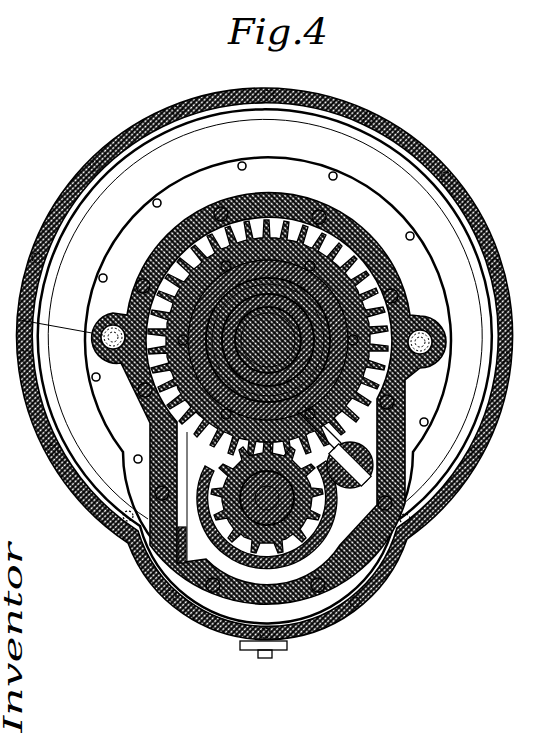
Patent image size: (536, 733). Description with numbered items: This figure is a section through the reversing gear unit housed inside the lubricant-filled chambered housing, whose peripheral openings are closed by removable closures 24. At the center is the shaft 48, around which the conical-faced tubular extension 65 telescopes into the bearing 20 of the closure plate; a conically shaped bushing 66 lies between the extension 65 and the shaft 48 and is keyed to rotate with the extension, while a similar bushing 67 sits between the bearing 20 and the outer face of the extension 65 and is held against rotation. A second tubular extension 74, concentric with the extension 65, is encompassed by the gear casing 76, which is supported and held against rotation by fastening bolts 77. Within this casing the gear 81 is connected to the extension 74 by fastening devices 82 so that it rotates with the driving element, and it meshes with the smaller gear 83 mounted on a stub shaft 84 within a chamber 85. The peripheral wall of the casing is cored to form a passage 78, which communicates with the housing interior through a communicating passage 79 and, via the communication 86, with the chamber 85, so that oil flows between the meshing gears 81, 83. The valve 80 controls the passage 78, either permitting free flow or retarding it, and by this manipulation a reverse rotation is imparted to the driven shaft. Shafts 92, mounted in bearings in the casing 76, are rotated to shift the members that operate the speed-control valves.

The bearing 20 is at (240, 265).
The tubular extension 74 is at (237, 222).
The fastening bolts 77 is at (222, 284).
The fastening devices 82 is at (308, 262).
The gear casing 76 is at (357, 242).
The gear 81 is at (390, 297).
The shafts 92 is at (420, 340).
The bushing 66 is at (158, 312).
The tubular extension 65 is at (178, 268).
The bushing 67 is at (200, 257).
The shaft 48 is at (157, 406).
The chamber 85 is at (152, 491).
The communication 86 is at (247, 442).
The valve 80 is at (380, 467).
The stub shaft 84 is at (201, 540).
The smaller gear 83 is at (292, 545).
The communicating passage 79 is at (180, 573).
The passage 78 is at (251, 586).
The closures 24 is at (266, 658).